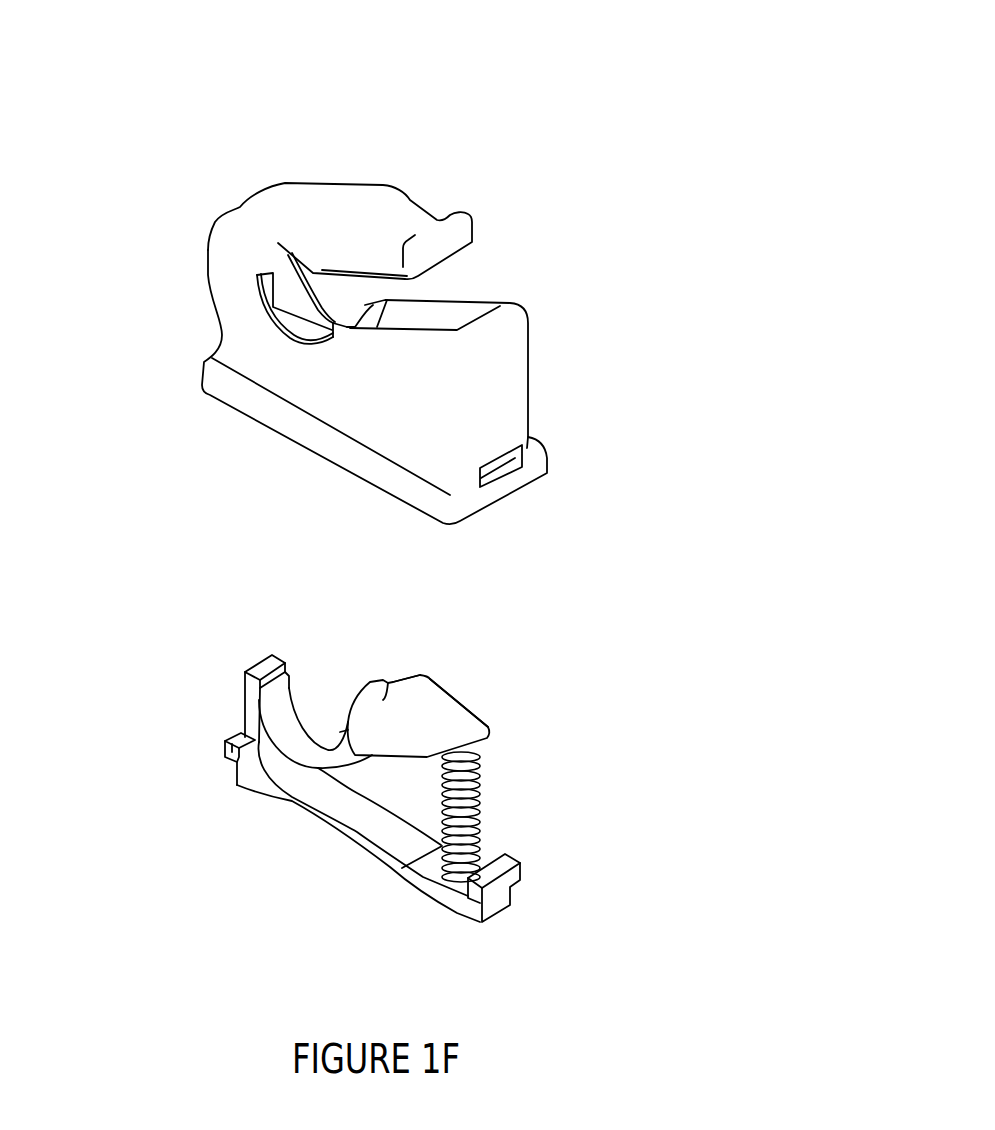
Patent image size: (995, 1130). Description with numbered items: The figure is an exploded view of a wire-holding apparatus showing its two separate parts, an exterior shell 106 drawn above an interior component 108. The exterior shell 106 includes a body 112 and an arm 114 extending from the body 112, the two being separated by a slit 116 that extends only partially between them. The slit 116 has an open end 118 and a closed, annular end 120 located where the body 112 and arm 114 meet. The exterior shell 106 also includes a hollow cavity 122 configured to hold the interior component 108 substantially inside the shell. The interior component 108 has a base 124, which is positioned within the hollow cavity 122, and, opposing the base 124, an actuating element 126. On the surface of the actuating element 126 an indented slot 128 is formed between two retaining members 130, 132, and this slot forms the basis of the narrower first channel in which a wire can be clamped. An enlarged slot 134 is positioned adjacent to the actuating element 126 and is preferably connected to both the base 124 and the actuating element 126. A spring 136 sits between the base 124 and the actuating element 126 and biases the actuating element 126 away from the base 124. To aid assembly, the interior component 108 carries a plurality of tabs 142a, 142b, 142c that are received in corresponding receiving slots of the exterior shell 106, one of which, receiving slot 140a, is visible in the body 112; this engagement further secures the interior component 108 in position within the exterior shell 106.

The exterior shell 106 is at (206, 112).
The interior component 108 is at (586, 712).
The body 112 is at (503, 402).
The arm 114 is at (408, 212).
The slit 116 is at (337, 305).
The open end 118 is at (462, 277).
The closed annular end 120 is at (327, 290).
The hollow cavity 122 is at (448, 317).
The base 124 is at (330, 833).
The actuating element 126 is at (457, 717).
The indented slot 128 is at (402, 683).
The retaining member 130 is at (371, 677).
The retaining member 132 is at (427, 678).
The enlarged slot 134 is at (313, 672).
The spring 136 is at (482, 815).
The receiving slot 140a is at (495, 472).
The tab 142a is at (521, 873).
The tab 142b is at (222, 752).
The tab 142c is at (252, 666).